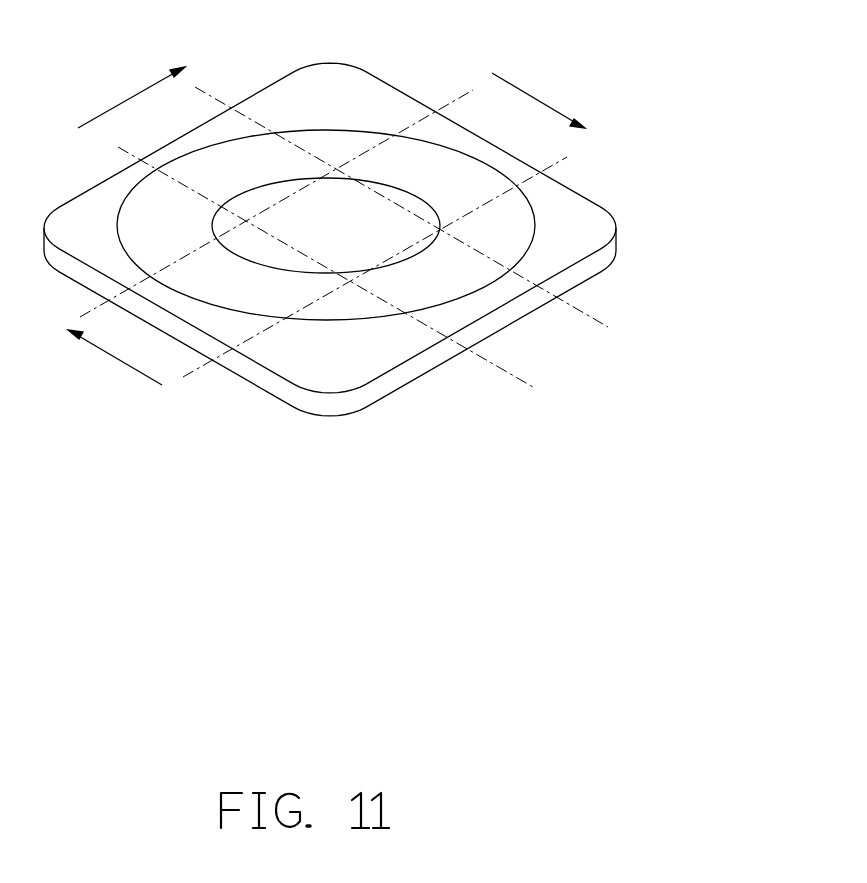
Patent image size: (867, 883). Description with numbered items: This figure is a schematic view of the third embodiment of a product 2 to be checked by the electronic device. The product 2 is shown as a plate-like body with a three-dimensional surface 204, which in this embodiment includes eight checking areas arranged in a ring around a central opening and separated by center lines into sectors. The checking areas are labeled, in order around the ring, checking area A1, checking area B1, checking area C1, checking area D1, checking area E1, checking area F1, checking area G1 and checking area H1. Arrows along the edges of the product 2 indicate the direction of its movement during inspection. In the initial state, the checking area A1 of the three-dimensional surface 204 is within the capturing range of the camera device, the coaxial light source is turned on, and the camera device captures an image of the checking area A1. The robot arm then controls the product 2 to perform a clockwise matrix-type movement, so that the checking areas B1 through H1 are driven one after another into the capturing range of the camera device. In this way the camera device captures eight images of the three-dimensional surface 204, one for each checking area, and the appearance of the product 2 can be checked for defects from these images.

The product 2 is at (385, 239).
The 3D surface 204 is at (385, 228).
The checking area A1 is at (370, 338).
The checking area B1 is at (250, 293).
The checking area C1 is at (145, 213).
The checking area D1 is at (238, 161).
The checking area E1 is at (319, 112).
The checking area F1 is at (449, 168).
The checking area G1 is at (558, 231).
The checking area H1 is at (446, 286).